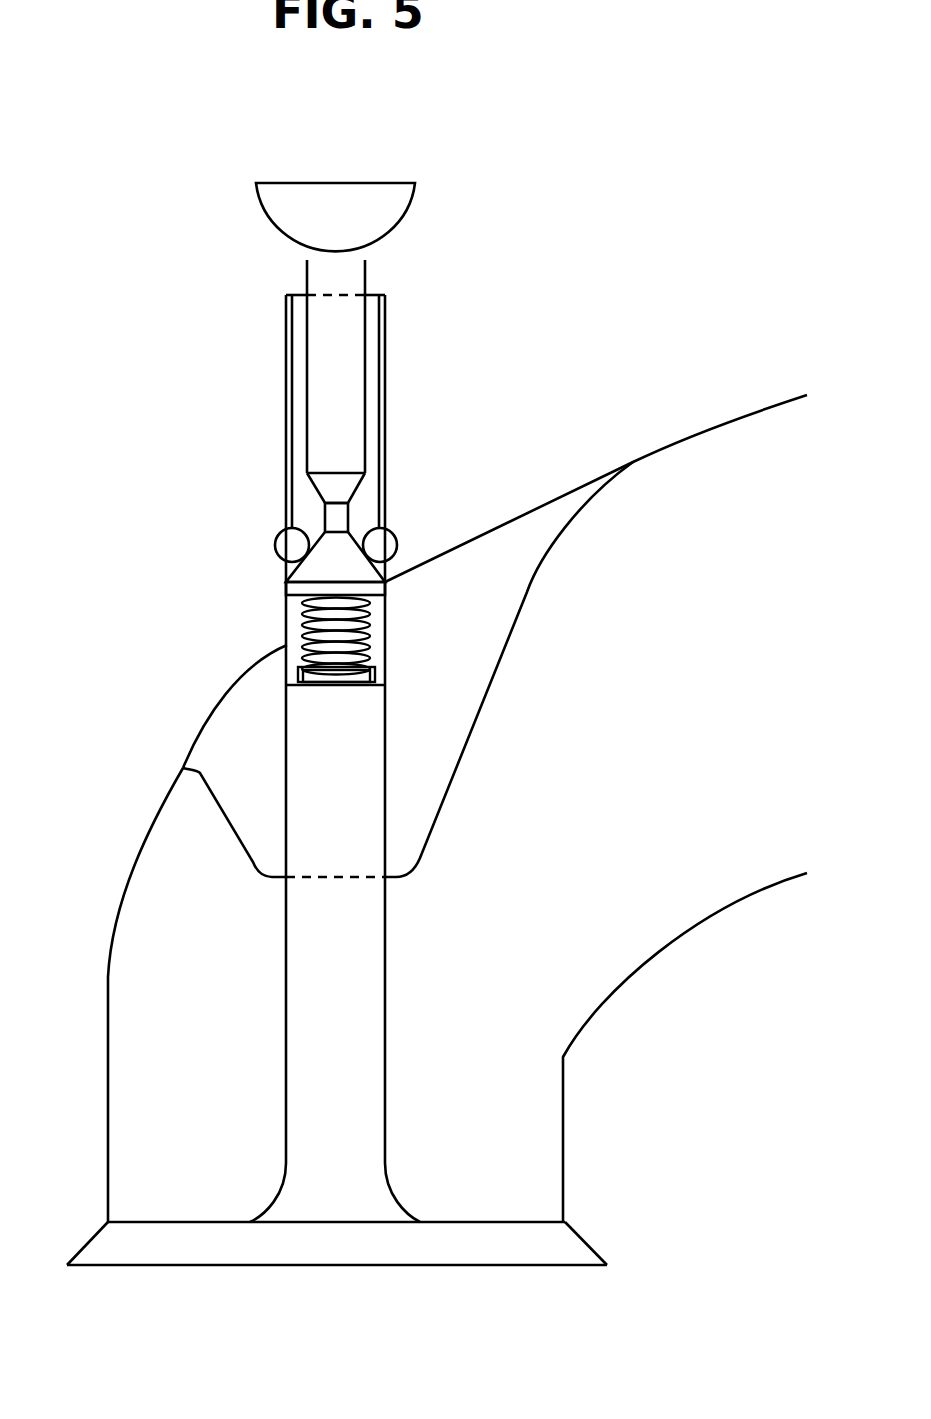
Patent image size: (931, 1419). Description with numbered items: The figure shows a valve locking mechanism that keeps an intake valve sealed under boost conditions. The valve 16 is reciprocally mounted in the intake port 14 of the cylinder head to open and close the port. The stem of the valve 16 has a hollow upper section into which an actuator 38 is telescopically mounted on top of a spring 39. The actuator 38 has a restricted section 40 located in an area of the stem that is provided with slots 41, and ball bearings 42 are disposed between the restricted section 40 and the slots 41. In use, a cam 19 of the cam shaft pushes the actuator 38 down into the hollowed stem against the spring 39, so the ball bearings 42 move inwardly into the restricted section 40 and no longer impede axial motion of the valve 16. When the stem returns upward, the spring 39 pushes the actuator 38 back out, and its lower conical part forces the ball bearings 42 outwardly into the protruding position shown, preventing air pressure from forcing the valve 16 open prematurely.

The intake port 14 is at (663, 935).
The valve 16 is at (388, 380).
The cam 19 is at (410, 218).
The actuator 38 is at (367, 277).
The spring 39 is at (370, 635).
The restricted section 40 is at (348, 515).
The slots 41 is at (288, 523).
The ball bearings 42 is at (274, 545).